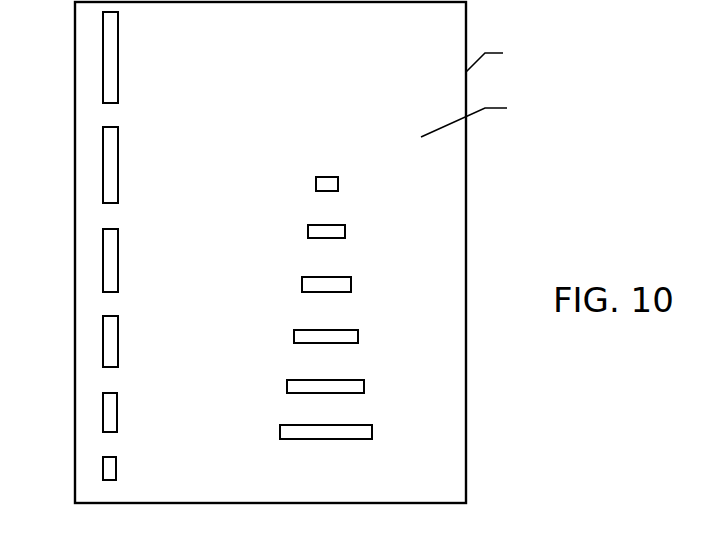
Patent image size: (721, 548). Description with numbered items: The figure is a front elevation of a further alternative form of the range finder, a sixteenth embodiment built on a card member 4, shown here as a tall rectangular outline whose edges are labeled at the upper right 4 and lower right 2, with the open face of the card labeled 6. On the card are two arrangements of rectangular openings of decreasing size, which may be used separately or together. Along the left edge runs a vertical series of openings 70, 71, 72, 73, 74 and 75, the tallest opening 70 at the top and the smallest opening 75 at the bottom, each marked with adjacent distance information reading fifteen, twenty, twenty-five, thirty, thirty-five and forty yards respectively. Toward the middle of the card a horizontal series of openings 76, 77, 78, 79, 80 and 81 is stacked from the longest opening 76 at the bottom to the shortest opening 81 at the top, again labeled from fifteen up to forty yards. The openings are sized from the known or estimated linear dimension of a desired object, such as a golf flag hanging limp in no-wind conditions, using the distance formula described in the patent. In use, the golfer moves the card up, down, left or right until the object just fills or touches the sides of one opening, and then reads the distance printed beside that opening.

The display screen 2 is at (453, 486).
The card member 4 is at (496, 57).
The display area 6 is at (473, 118).
The vertical rectangular opening 70 is at (106, 60).
The vertical rectangular opening 71 is at (106, 166).
The vertical rectangular opening 72 is at (106, 260).
The vertical rectangular opening 73 is at (106, 342).
The vertical rectangular opening 74 is at (106, 410).
The vertical rectangular opening 75 is at (106, 470).
The horizontal rectangular opening 76 is at (285, 427).
The horizontal rectangular opening 77 is at (291, 381).
The horizontal rectangular opening 78 is at (298, 331).
The horizontal rectangular opening 79 is at (305, 279).
The horizontal rectangular opening 80 is at (311, 226).
The horizontal rectangular opening 81 is at (316, 178).